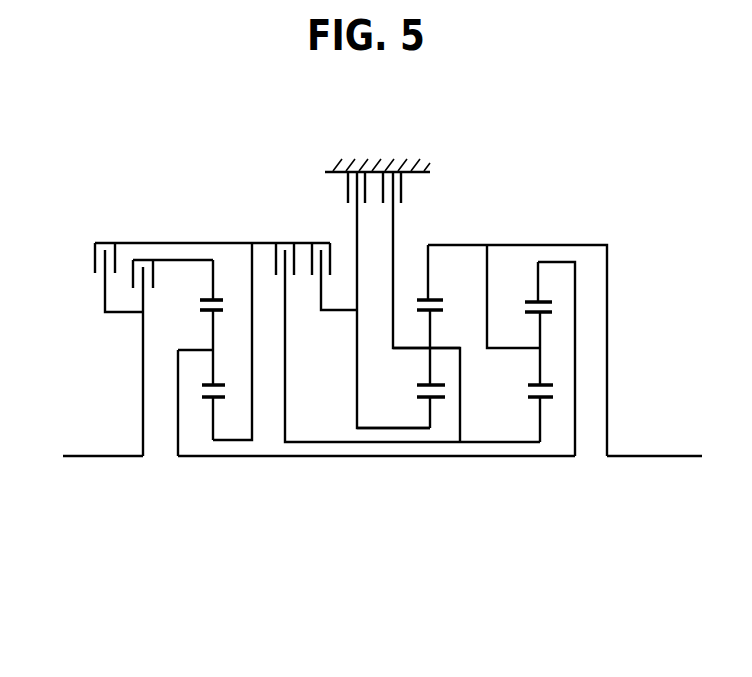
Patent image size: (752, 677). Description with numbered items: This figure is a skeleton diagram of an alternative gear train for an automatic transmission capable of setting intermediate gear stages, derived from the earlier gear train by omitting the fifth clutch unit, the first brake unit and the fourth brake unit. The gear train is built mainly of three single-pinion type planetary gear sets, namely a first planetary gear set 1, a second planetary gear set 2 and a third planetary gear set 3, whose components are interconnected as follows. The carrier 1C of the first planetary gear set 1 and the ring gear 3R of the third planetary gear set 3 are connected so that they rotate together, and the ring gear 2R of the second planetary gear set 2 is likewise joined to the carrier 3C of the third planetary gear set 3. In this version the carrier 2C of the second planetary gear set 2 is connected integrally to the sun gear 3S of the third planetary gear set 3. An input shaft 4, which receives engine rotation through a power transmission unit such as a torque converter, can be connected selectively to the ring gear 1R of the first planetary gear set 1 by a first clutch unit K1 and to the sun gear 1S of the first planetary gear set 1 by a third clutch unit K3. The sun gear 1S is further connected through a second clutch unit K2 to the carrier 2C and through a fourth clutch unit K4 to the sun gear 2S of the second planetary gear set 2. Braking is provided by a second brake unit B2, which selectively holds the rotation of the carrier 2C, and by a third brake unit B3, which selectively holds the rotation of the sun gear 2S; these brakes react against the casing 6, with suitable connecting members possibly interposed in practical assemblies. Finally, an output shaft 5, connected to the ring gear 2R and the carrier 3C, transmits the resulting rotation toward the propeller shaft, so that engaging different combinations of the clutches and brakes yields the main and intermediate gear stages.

The first planetary gear set 1 is at (202, 391).
The second planetary gear set 2 is at (414, 385).
The third planetary gear set 3 is at (517, 386).
The input shaft 4 is at (97, 456).
The output shaft 5 is at (644, 456).
The casing 6 is at (383, 170).
The first clutch unit K1 is at (173, 358).
The second clutch unit K2 is at (403, 328).
The third clutch unit K3 is at (117, 262).
The fourth clutch unit K4 is at (334, 262).
The second brake unit B2 is at (421, 307).
The third brake unit B3 is at (370, 300).
The ring gear of first planetary gear set 1R is at (218, 303).
The carrier of first planetary gear set 1C is at (199, 350).
The sun gear of first planetary gear set 1S is at (214, 398).
The ring gear of second planetary gear set 2R is at (431, 300).
The carrier of second planetary gear set 2C is at (437, 349).
The sun gear of second planetary gear set 2S is at (418, 400).
The ring gear of third planetary gear set 3R is at (531, 301).
The carrier of third planetary gear set 3C is at (528, 348).
The sun gear of third planetary gear set 3S is at (536, 401).